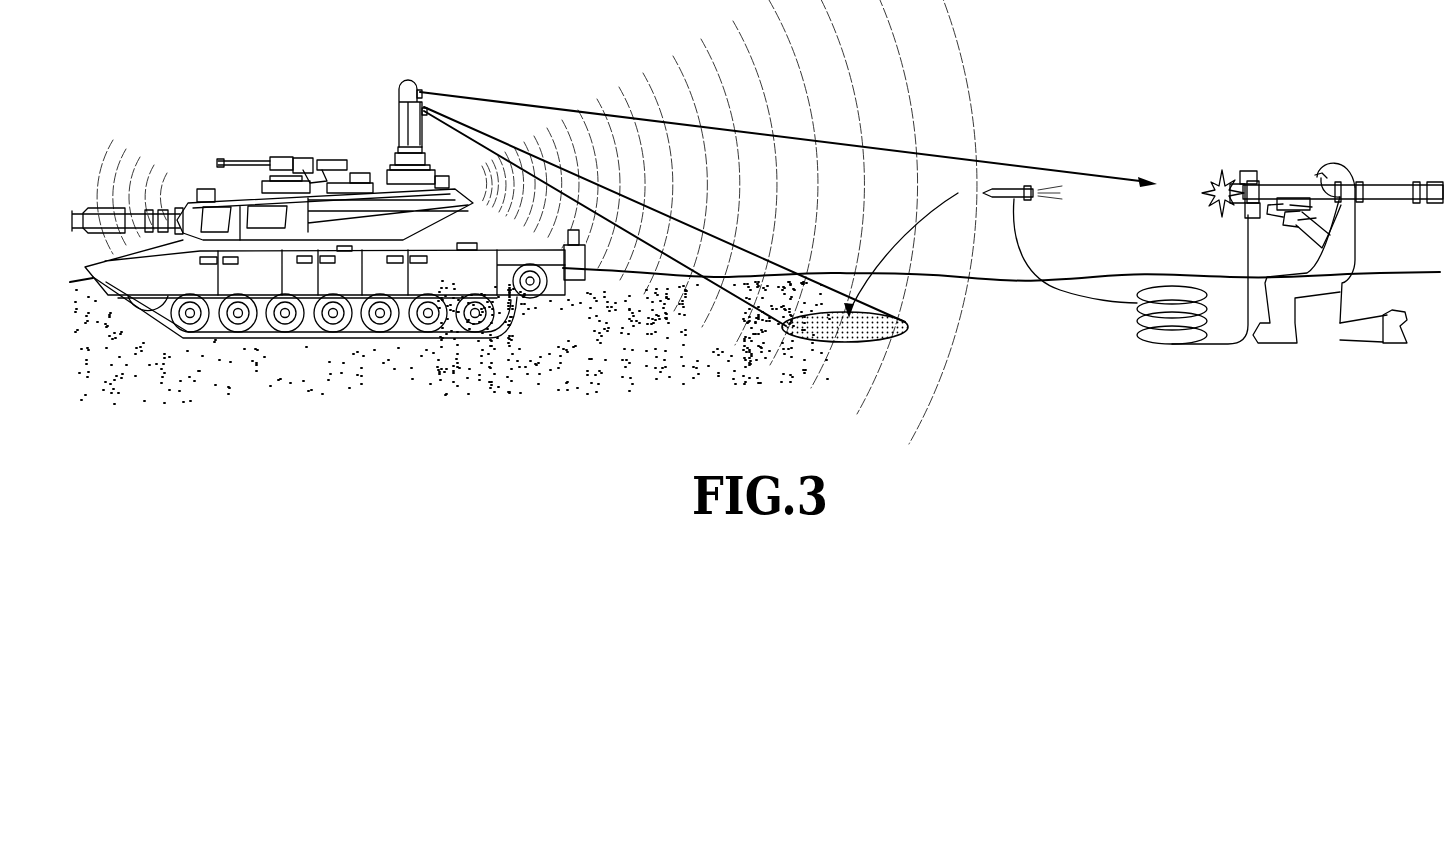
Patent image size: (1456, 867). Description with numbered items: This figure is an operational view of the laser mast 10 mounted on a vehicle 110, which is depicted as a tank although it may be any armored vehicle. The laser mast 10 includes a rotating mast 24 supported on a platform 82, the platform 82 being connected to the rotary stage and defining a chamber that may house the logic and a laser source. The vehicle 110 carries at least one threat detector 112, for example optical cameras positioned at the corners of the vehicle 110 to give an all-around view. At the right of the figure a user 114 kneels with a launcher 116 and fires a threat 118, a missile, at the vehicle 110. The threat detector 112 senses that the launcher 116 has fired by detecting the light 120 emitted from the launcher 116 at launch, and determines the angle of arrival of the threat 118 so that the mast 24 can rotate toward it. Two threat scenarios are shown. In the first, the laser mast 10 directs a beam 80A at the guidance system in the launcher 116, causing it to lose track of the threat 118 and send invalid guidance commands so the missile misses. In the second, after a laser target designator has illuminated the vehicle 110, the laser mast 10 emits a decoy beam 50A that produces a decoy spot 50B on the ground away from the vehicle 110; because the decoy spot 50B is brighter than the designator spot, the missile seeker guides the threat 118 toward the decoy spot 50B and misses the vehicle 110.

The laser mast 10 is at (353, 105).
The mast 24 is at (388, 97).
The platform 82 is at (388, 180).
The threat detector 112 is at (203, 189).
The beam 80A is at (540, 104).
The decoy beam 50A is at (684, 223).
The decoy spot 50B is at (808, 333).
The vehicle 110 is at (418, 350).
The threat 118 is at (1024, 203).
The launcher 116 is at (1282, 172).
The user 114 is at (1354, 146).
The light 120 is at (1212, 200).